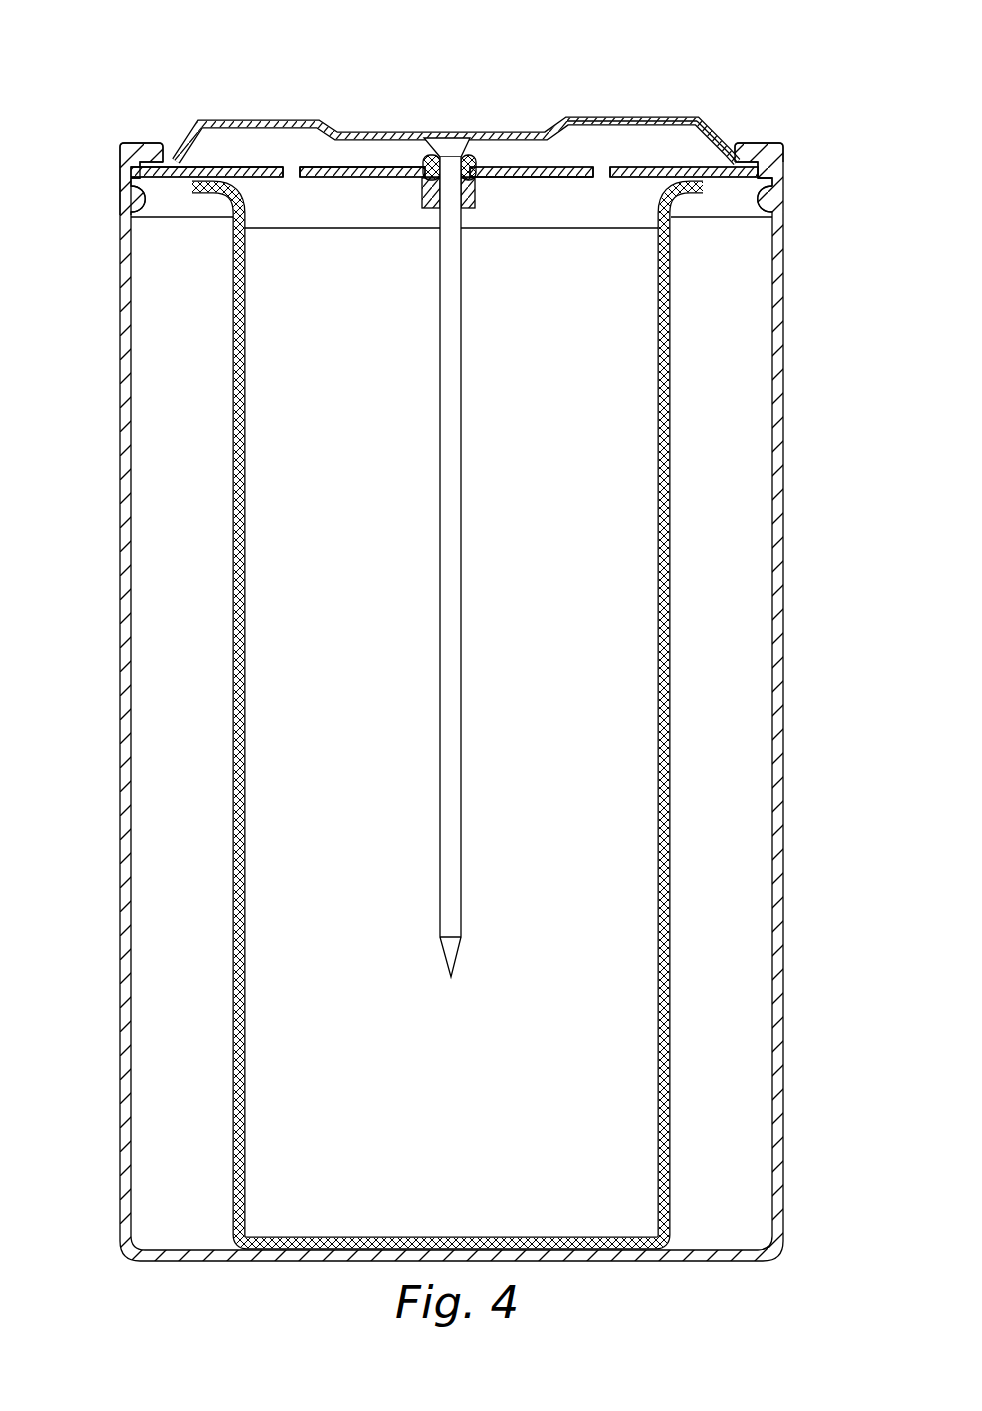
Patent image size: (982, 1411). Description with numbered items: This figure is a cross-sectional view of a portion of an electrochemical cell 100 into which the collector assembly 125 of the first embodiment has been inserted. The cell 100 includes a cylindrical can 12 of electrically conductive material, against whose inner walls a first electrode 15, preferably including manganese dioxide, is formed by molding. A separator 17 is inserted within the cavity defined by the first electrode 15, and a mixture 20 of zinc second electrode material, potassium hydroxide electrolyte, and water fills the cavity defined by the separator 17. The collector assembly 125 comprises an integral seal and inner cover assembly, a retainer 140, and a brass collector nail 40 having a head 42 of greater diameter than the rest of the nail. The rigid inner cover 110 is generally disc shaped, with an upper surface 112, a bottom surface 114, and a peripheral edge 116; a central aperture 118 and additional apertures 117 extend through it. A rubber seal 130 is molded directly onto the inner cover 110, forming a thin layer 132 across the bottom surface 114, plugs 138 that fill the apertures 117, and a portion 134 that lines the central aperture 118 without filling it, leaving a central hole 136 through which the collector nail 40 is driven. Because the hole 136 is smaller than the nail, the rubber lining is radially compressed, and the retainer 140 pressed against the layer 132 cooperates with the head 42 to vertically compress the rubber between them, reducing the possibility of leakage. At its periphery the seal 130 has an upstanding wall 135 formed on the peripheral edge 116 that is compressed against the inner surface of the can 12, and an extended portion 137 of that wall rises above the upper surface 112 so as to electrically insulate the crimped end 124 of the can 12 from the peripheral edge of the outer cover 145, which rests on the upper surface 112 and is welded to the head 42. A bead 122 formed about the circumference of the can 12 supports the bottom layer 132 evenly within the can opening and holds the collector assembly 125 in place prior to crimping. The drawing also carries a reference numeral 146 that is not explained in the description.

The cylindrical can 12 is at (781, 388).
The first electrode 15 is at (158, 537).
The separator 17 is at (670, 615).
The mixture of second electrode and electrolyte 20 is at (585, 718).
The collector nail 40 is at (461, 805).
The head 42 is at (447, 137).
The electrochemical cell 100 is at (447, 64).
The rigid inner cover 110 is at (215, 128).
The upper surface 112 is at (251, 165).
The bottom surface 114 is at (129, 208).
The peripheral edge 116 is at (118, 170).
The additional apertures 117 is at (305, 164).
The central aperture 118 is at (480, 164).
The bead 122 is at (777, 197).
The crimped end 124 is at (760, 140).
The collector assembly 125 is at (98, 142).
The seal 130 is at (531, 180).
The layer 132 is at (178, 180).
The portion of seal extending within central hole 134 is at (474, 154).
The upstanding wall 135 is at (757, 170).
The central hole 136 is at (422, 177).
The extended portion 137 is at (740, 150).
The plugs 138 is at (295, 178).
The retainer 140 is at (432, 208).
The outer cover 145 is at (607, 118).
The right lip 146 is at (738, 180).